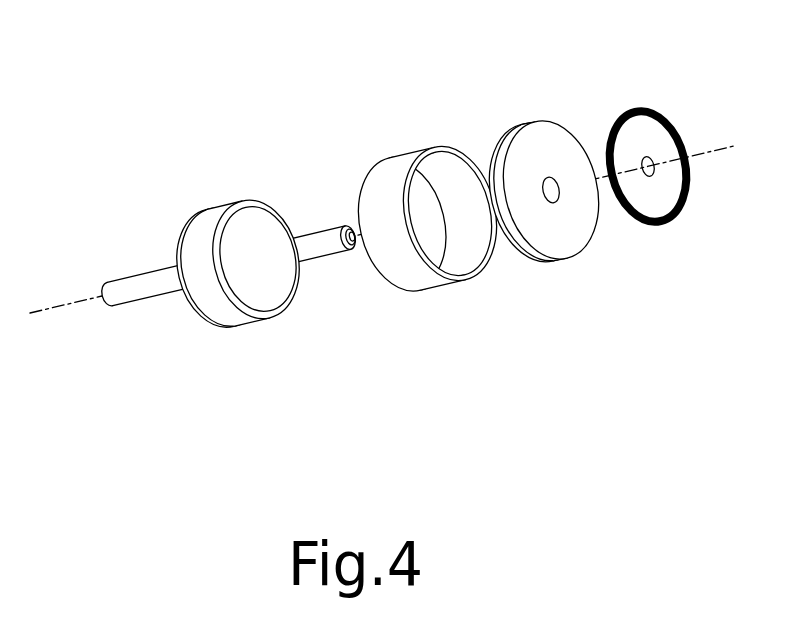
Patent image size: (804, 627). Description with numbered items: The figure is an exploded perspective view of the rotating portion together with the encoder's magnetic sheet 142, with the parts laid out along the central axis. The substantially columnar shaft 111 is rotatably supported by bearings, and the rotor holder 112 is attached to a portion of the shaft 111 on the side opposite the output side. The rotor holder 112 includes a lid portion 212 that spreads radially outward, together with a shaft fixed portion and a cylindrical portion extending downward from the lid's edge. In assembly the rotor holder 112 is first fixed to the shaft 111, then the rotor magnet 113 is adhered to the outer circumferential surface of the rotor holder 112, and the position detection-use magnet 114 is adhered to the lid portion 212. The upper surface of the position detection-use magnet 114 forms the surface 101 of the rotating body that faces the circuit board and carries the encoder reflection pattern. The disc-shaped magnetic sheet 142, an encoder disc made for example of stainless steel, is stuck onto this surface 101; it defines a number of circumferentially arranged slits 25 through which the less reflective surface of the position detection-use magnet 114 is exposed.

The shaft 111 is at (135, 287).
The rotor holder 112 is at (244, 261).
The lid portion 212 is at (267, 290).
The rotor magnet 113 is at (397, 167).
The position detection-use magnet 114 is at (513, 137).
The surface of the rotating body 101 is at (541, 156).
The magnetic sheet 142 is at (637, 138).
The slits 25 is at (649, 121).